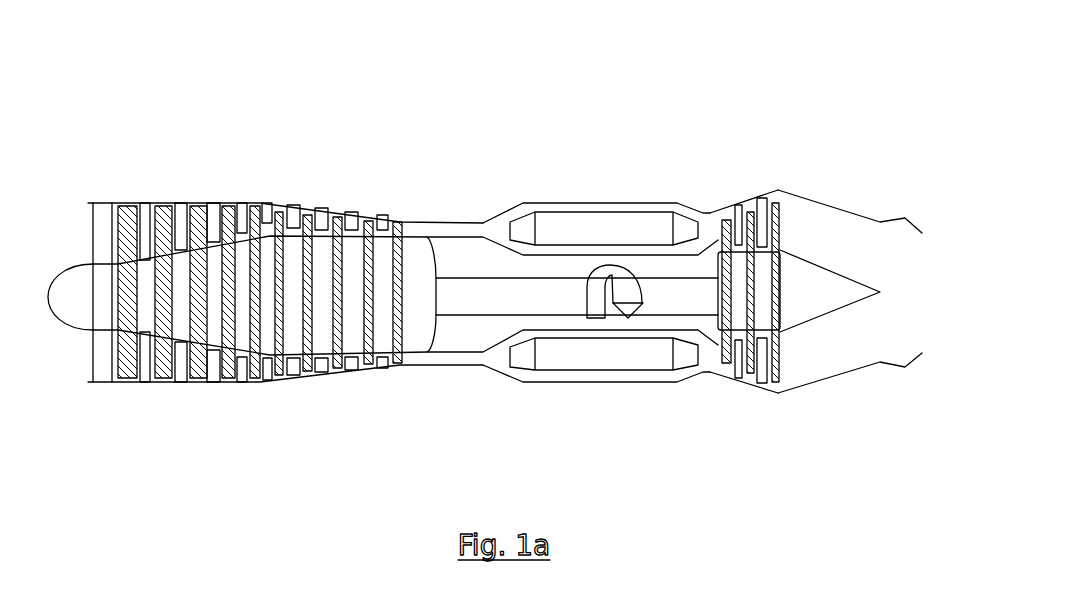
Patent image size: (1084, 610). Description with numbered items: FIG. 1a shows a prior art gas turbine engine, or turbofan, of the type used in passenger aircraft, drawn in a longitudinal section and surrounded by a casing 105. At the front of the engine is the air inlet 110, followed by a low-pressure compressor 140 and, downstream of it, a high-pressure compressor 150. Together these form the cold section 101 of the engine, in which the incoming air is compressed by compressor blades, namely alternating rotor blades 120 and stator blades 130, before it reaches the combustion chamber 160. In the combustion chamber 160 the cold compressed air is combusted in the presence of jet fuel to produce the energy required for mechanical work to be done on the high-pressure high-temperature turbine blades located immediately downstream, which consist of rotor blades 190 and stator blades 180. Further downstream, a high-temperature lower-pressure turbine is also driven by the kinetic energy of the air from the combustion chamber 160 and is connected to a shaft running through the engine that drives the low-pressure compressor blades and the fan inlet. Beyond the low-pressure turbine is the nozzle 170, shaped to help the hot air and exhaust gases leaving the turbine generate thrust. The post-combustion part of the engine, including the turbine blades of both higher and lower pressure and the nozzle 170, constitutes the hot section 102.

The cold section 101 is at (95, 167).
The hot section 102 is at (538, 170).
The casing 105 is at (427, 365).
The air inlet 110 is at (105, 357).
The rotor blades 120 is at (137, 372).
The stator blades 130 is at (213, 367).
The low-pressure compressor 140 is at (153, 180).
The high-pressure compressor 150 is at (365, 192).
The combustion chamber 160 is at (607, 183).
The nozzle 170 is at (890, 366).
The stator blades 180 is at (767, 367).
The rotor blades 190 is at (722, 347).